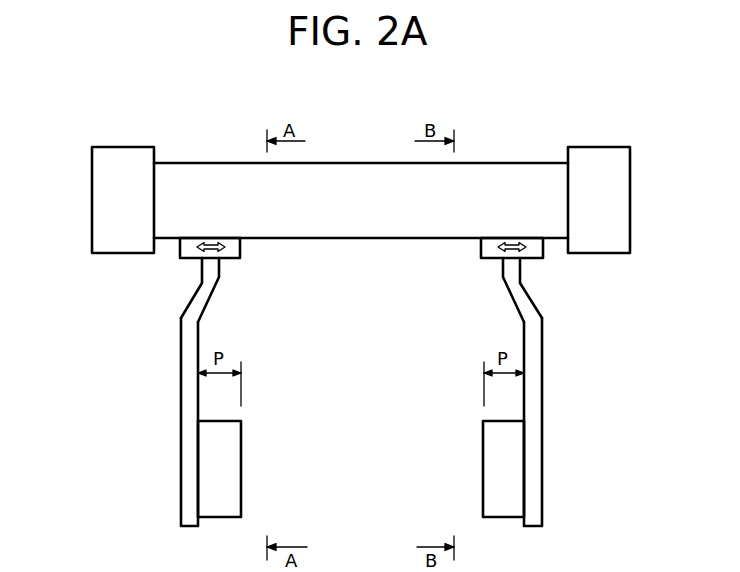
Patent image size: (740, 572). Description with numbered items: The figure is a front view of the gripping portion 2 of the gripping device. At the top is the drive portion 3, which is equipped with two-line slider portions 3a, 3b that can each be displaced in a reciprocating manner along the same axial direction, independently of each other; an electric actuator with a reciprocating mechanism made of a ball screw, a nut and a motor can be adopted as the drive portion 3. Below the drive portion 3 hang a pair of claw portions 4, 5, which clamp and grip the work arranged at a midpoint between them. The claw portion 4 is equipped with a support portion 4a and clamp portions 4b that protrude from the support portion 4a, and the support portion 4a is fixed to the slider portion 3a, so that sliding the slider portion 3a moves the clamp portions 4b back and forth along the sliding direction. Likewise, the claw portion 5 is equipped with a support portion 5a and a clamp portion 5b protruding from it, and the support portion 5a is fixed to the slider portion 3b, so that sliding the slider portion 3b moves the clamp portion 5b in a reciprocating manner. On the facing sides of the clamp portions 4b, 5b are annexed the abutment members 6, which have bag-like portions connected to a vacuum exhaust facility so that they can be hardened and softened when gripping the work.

The gripping portion 2 is at (70, 145).
The drive portion 3 is at (353, 258).
The slider portion 3a is at (240, 246).
The slider portion 3b is at (481, 249).
The claw portion 4 is at (198, 392).
The support portion 4a is at (210, 302).
The clamp portion 4b is at (181, 417).
The claw portion 5 is at (530, 392).
The support portion 5a is at (513, 302).
The clamp portion 5b is at (543, 417).
The abutment member 6 is at (253, 460).